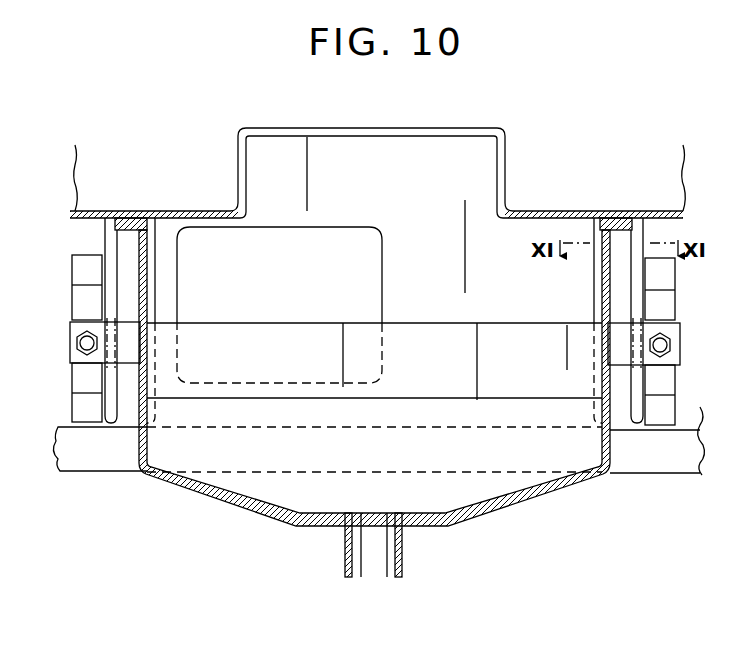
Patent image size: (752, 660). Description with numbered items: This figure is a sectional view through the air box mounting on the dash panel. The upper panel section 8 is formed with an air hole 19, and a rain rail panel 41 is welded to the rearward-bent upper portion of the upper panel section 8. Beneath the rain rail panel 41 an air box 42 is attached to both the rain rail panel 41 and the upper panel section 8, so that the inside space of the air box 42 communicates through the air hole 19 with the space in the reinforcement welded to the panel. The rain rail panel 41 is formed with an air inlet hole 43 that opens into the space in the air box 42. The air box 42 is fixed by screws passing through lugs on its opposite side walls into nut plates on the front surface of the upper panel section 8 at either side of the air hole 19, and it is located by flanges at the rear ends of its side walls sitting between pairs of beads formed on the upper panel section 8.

The upper panel section 8 is at (690, 418).
The air hole 19 is at (370, 231).
The rain rail panel 41 is at (188, 210).
The air box 42 is at (190, 493).
The air inlet hole 43 is at (503, 205).